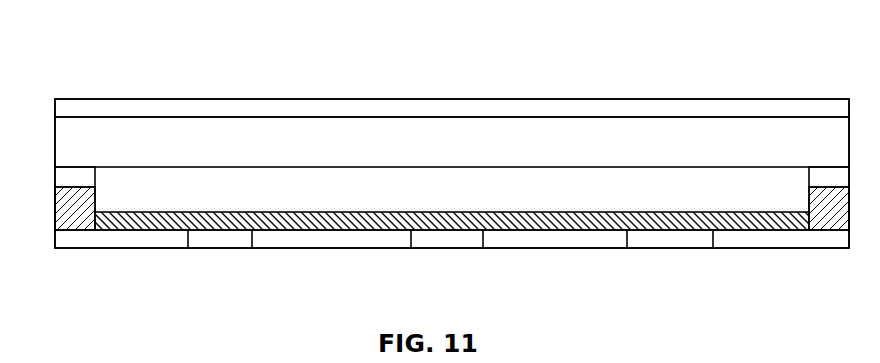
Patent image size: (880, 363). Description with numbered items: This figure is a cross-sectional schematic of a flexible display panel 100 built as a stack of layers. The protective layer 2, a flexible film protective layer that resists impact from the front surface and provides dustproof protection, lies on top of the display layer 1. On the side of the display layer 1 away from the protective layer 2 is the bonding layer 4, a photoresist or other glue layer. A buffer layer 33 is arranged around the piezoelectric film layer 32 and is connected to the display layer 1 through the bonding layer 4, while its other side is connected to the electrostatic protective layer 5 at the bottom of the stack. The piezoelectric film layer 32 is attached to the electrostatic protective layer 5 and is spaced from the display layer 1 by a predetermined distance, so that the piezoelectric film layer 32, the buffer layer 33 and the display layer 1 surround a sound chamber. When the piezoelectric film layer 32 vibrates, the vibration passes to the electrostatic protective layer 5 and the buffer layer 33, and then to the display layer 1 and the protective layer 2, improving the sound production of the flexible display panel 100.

The flexible display panel 100 is at (163, 63).
The display layer 1 is at (468, 138).
The protective layer 2 is at (260, 105).
The bonding layer 4 is at (67, 174).
The electrostatic protective layer 5 is at (573, 237).
The piezoelectric film layer 32 is at (345, 226).
The buffer layer 33 is at (82, 222).